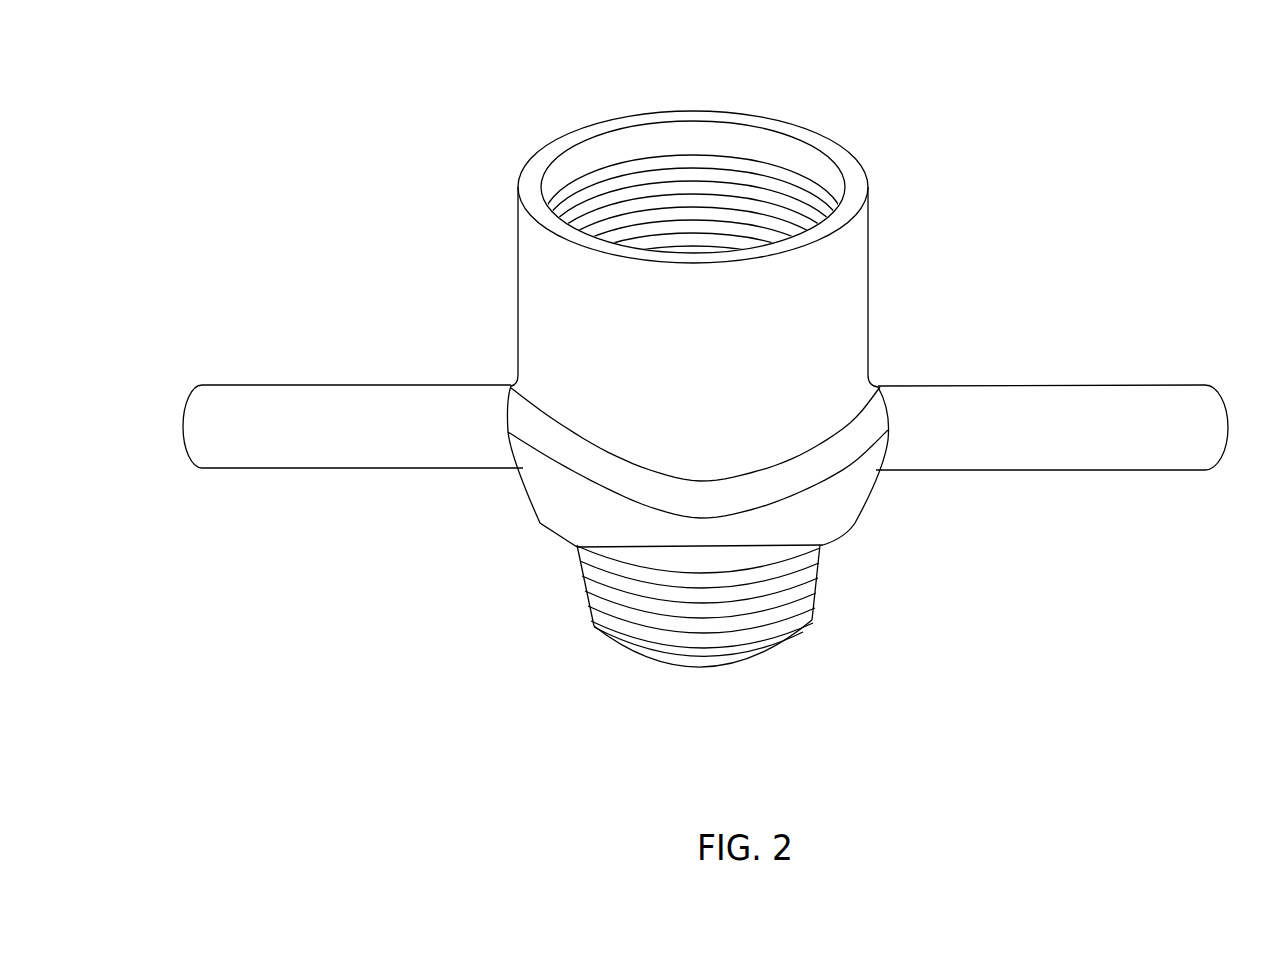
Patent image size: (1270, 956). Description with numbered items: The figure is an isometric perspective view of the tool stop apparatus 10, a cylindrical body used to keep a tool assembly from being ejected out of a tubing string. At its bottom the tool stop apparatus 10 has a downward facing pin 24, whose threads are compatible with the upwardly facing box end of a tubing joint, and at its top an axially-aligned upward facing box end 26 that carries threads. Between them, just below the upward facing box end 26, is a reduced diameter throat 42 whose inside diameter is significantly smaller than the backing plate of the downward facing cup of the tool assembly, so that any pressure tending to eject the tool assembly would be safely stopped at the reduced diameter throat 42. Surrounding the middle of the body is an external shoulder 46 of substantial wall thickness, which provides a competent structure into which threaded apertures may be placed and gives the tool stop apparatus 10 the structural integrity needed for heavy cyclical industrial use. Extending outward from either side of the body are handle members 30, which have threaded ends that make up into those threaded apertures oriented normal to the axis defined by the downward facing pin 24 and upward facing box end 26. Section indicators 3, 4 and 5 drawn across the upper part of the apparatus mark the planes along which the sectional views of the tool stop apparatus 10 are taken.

The tool stop apparatus 10 is at (893, 97).
The downward facing pin 24 is at (788, 643).
The upward facing box end 26 is at (731, 160).
The handle members 30 is at (303, 483).
The reduced diameter throat 42 is at (773, 133).
The external shoulder 46 is at (925, 525).
The section line 3- 3 is at (493, 187).
The section line 4- 4 is at (517, 163).
The section line 5- 5 is at (541, 141).